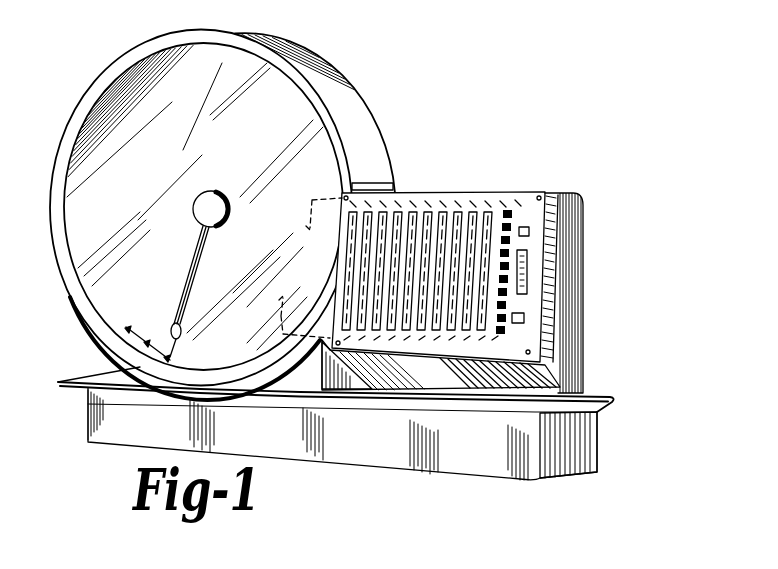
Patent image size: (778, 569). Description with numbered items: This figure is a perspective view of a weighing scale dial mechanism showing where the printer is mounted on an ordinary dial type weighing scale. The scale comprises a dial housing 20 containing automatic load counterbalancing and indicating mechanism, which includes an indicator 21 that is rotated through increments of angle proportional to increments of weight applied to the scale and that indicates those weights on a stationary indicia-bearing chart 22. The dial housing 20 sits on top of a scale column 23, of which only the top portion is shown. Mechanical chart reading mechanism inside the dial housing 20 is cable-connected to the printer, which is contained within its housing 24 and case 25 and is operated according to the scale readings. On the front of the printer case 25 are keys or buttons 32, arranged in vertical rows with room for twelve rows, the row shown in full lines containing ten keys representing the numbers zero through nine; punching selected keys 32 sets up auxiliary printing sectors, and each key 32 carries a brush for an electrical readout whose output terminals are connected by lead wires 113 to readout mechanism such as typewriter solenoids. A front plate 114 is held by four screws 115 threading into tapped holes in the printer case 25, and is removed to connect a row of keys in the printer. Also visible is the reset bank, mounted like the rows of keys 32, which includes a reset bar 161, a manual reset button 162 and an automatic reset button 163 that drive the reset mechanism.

The dial housing 20 is at (65, 143).
The indicator 21 is at (194, 281).
The indicia-bearing chart 22 is at (127, 325).
The scale column 23 is at (90, 424).
The printer housing 24 is at (598, 440).
The printer case 25 is at (575, 288).
The keys 32 is at (511, 214).
The lead wires 113 is at (312, 200).
The front plate 114 is at (507, 353).
The screws 115 is at (541, 196).
The reset bar 161 is at (528, 273).
The manual reset button 162 is at (528, 318).
The automatic reset button 163 is at (530, 232).